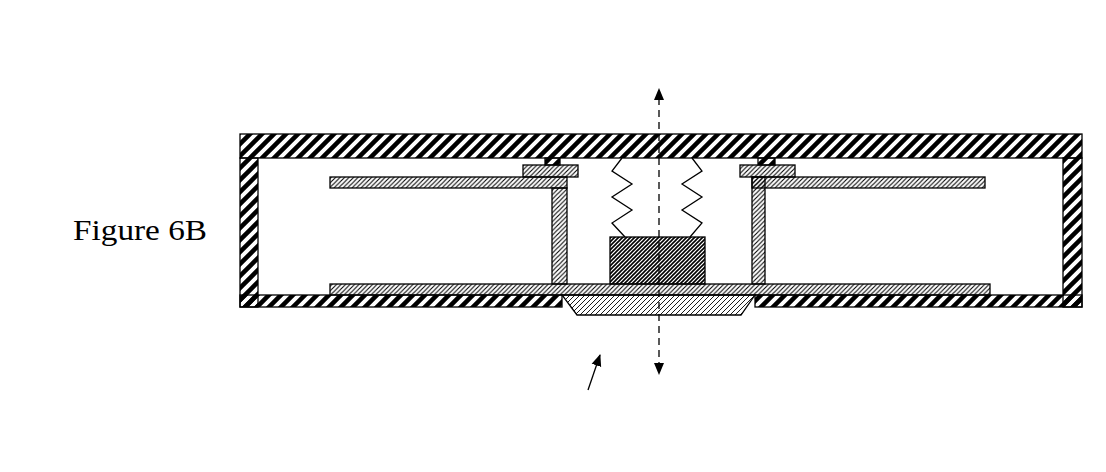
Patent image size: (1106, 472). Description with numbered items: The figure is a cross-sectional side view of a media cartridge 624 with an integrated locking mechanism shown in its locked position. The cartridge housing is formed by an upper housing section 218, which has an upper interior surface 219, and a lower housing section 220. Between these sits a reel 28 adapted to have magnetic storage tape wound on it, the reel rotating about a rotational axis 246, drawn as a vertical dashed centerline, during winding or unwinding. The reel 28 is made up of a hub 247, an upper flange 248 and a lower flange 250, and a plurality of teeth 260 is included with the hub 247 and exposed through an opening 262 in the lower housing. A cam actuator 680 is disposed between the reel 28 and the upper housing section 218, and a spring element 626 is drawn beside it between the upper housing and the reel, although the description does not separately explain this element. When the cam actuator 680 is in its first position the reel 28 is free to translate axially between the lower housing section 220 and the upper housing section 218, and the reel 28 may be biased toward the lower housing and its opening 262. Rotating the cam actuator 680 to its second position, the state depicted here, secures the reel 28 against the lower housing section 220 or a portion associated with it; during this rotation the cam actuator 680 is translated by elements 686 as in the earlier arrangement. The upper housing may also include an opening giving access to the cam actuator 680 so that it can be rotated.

The cartridge 624 is at (283, 103).
The reel 28 is at (453, 162).
The upper housing section 218 is at (848, 138).
The upper interior surface 219 is at (800, 157).
The lower housing section 220 is at (408, 307).
The upper flange 248 is at (387, 178).
The lower flange 250 is at (330, 295).
The hub 247 is at (752, 215).
The cam actuator 680 is at (530, 165).
The elements 686 is at (553, 160).
The spring mass suspension 626 is at (622, 172).
The teeth 260 is at (577, 313).
The opening 262 is at (581, 392).
The rotational axis 246 is at (663, 342).